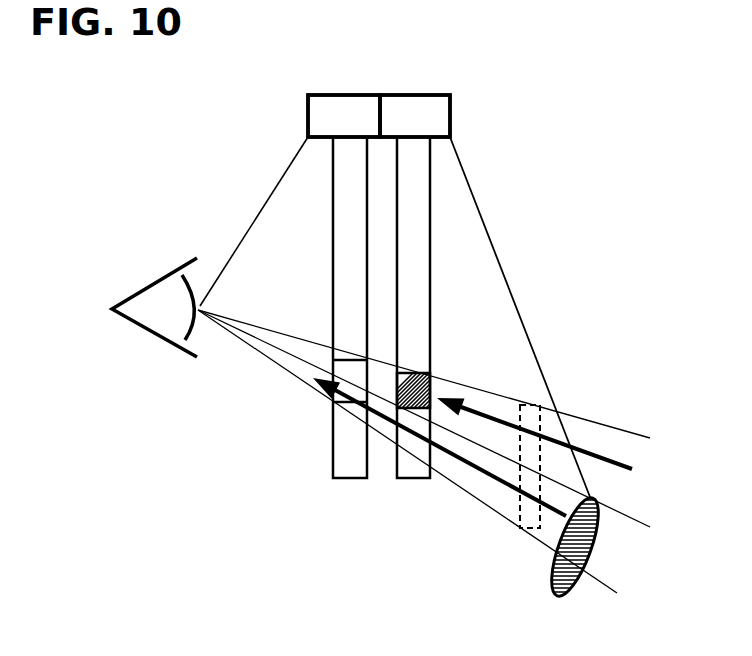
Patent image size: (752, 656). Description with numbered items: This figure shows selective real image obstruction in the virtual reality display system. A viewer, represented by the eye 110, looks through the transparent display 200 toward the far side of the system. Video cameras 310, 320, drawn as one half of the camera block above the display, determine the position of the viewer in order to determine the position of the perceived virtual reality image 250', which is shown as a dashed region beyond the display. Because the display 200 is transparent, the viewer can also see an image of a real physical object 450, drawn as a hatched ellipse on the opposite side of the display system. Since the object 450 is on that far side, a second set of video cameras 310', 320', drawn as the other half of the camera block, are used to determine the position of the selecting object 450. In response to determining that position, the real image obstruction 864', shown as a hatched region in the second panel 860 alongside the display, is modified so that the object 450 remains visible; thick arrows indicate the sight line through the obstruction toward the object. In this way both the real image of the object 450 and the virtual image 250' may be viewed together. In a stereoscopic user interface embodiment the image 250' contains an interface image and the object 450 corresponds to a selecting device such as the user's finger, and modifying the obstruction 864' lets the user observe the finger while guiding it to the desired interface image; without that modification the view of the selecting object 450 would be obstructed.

The eye of viewer 110 is at (160, 340).
The display 200 is at (340, 433).
The perceived virtual reality image 250' is at (488, 495).
The video camera 310 is at (293, 100).
The video camera 320 is at (344, 116).
The second video camera 310' is at (366, 78).
The second video camera 320' is at (415, 116).
The real physical object 450 is at (555, 597).
The second display panel 860 is at (403, 480).
The real image obstruction 864' is at (428, 376).